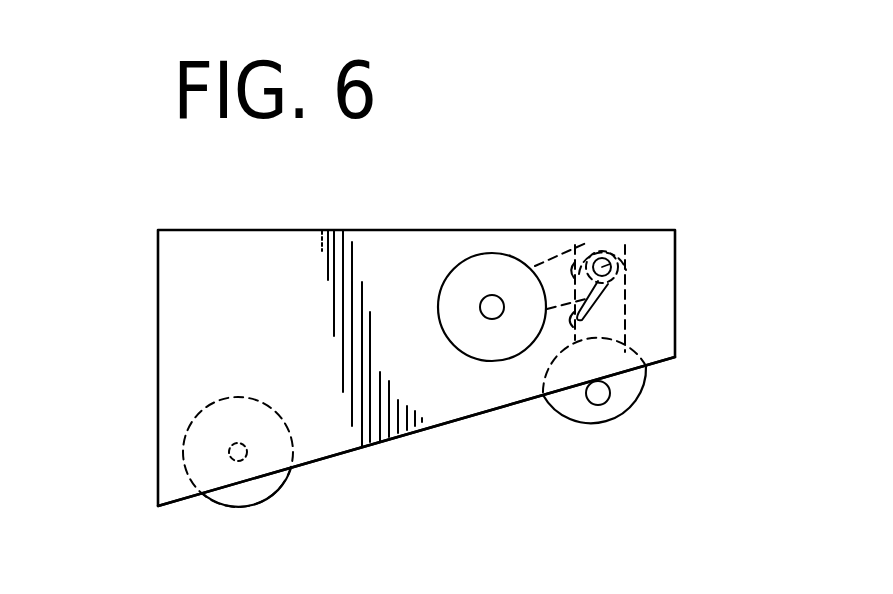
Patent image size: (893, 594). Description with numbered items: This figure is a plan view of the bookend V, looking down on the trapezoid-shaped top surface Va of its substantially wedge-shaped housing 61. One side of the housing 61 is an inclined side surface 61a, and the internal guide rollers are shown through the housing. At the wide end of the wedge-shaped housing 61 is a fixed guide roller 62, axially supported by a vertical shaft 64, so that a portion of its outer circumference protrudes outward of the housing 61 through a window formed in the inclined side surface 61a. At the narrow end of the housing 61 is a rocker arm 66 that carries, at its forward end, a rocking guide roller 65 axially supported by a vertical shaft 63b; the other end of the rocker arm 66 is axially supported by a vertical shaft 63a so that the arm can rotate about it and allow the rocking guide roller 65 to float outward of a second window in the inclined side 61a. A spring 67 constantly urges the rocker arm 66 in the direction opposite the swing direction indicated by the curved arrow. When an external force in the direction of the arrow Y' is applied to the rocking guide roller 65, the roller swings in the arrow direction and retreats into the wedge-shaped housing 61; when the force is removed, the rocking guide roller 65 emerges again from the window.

The wedge-shaped housing 61 is at (397, 230).
The inclined side surface 61a is at (437, 427).
The fixed guide roller 62 is at (240, 452).
The vertical shaft 63a is at (618, 268).
The vertical shaft 63b is at (610, 394).
The vertical shaft 64 is at (262, 487).
The rocking guide roller 65 is at (492, 296).
The rocker arm 66 is at (615, 325).
The spring 67 is at (590, 307).
The top surface Va is at (205, 298).
The bookend V is at (674, 172).
The arrow Y' is at (769, 523).